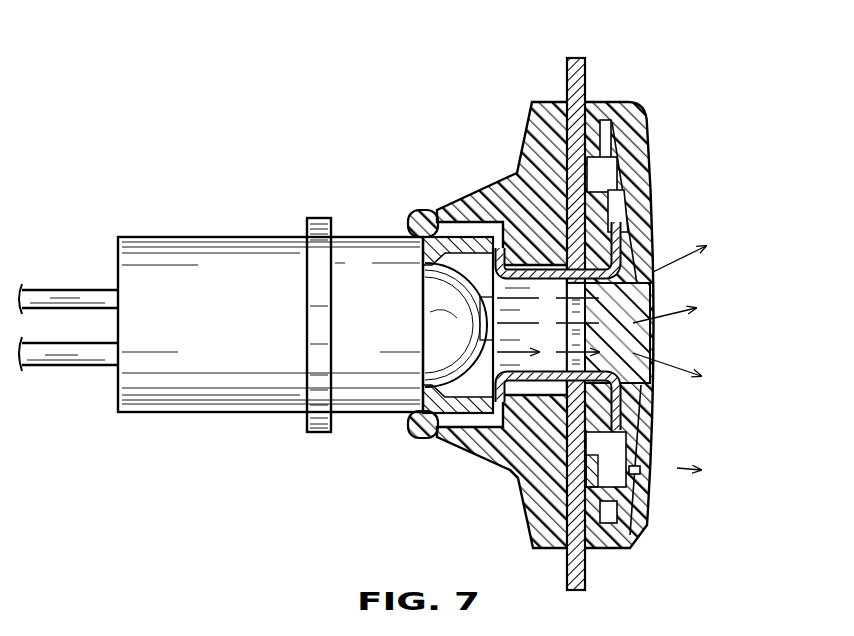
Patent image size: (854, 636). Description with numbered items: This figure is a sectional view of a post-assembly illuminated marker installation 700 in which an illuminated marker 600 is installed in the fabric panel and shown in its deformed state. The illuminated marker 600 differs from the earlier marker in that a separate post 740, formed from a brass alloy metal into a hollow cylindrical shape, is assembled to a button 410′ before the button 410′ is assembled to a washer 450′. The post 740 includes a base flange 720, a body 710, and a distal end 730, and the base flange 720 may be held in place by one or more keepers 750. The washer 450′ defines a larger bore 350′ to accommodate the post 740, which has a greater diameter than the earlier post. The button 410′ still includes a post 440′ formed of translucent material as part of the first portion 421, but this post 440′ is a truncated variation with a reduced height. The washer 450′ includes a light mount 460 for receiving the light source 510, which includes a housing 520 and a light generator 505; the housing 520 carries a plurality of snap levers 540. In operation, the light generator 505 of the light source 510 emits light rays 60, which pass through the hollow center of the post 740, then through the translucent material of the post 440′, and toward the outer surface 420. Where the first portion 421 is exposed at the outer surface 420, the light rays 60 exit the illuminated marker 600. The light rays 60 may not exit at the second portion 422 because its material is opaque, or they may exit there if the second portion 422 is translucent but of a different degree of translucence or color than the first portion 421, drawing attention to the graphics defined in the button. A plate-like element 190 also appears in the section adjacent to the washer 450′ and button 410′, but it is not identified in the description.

The post-assembly illuminated marker installation 700 is at (322, 62).
The light source 510 is at (211, 232).
The housing 520 is at (222, 413).
The distal end 730 is at (420, 357).
The light mount 460 is at (437, 445).
The post 440′ is at (453, 318).
The light generator 505 is at (490, 377).
The outer surface 420 is at (590, 316).
The washer 450′ is at (513, 134).
The snap levers 540 is at (467, 428).
The post 740 is at (507, 468).
The body 710 is at (512, 245).
The first portion 421 is at (660, 283).
The second portion 422 is at (650, 425).
The base flange 720 is at (640, 268).
The button 410′ is at (629, 545).
The mounting plate 190 is at (588, 568).
The bore 350′ is at (660, 295).
The keepers 750 is at (532, 100).
The illuminated marker 600 is at (660, 350).
The light rays 60 is at (680, 250).